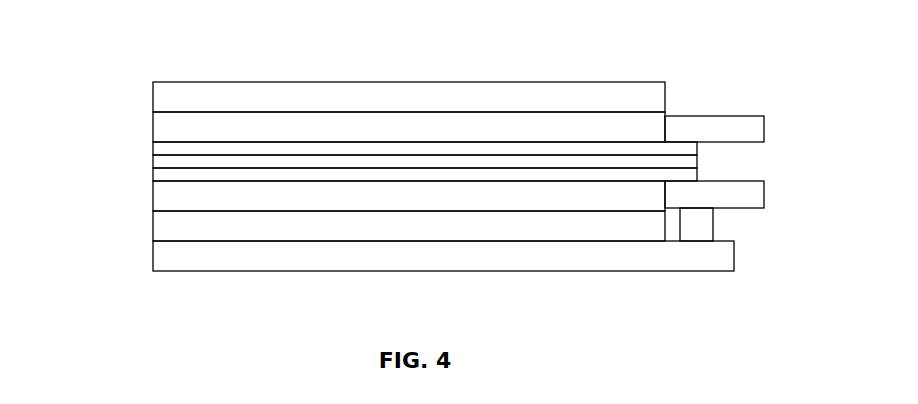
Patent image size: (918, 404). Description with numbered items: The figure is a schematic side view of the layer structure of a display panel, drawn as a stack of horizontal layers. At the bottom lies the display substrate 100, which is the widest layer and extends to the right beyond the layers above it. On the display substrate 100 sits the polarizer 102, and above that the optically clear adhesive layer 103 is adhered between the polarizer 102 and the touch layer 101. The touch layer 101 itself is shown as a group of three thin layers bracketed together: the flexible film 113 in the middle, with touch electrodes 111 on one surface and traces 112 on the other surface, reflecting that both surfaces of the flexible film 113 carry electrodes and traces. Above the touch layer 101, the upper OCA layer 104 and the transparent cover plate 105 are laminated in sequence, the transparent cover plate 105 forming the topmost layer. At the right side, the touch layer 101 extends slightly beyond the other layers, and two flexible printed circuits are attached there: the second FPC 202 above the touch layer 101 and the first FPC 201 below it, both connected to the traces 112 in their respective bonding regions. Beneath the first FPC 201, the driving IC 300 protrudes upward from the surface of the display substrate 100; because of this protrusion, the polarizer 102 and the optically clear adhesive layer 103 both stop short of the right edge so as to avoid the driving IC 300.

The display substrate 100 is at (734, 260).
The touch layer 101 is at (349, 151).
The polarizer 102 is at (163, 225).
The optically clear adhesive layer 103 is at (163, 204).
The upper OCA layer 104 is at (153, 123).
The transparent cover plate 105 is at (572, 82).
The touch electrodes 111 is at (153, 142).
The traces 112 is at (153, 172).
The flexible film 113 is at (153, 157).
The first flexible printed circuit 201 is at (758, 195).
The second flexible printed circuit 202 is at (678, 113).
The driving IC 300 is at (702, 232).